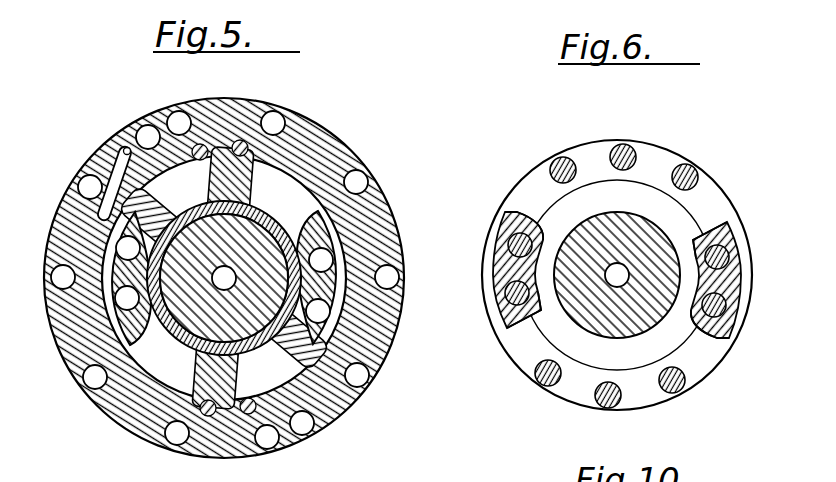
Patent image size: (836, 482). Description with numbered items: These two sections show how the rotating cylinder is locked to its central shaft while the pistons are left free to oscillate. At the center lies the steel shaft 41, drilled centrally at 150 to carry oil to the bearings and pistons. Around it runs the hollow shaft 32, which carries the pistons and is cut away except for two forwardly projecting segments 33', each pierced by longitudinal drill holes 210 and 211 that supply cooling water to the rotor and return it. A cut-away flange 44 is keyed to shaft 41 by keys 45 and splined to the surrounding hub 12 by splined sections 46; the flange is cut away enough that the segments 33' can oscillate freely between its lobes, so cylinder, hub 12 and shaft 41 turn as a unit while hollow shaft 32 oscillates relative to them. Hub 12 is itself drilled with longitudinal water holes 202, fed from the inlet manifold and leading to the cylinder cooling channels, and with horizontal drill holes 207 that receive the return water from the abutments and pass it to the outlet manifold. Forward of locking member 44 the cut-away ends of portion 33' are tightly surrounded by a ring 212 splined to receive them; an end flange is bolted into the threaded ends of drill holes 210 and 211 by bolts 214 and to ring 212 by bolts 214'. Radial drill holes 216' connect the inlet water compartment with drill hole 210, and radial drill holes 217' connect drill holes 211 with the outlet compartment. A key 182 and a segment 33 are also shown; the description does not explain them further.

In FIG. 5, the hub 12 is at (340, 139).
In FIG. 5, the hollow shaft 32 is at (188, 351).
In FIG. 5, the cam segment 33 is at (136, 281).
In FIG. 5, the forwardly projecting segments 33' is at (313, 277).
In FIG. 6, the forwardly projecting segments 33' is at (618, 281).
In FIG. 5, the steel shaft 41 is at (168, 338).
In FIG. 6, the steel shaft 41 is at (642, 327).
In FIG. 5, the cut-away flange 44 is at (262, 214).
In FIG. 5, the keys 45 is at (217, 243).
In FIG. 5, the splined sections 46 is at (242, 171).
In FIG. 5, the central drill hole 150 is at (237, 277).
In FIG. 6, the central drill hole 150 is at (630, 279).
In FIG. 5, the key 182 is at (120, 150).
In FIG. 5, the drill holes 202 is at (282, 113).
In FIG. 5, the horizontal drill holes 207 is at (178, 111).
In FIG. 5, the longitudinal drill hole 210 is at (116, 247).
In FIG. 5, the longitudinal drill hole 211 is at (118, 304).
In FIG. 6, the ring 212 is at (713, 358).
In FIG. 6, the bolts 214 is at (631, 271).
In FIG. 6, the bolts 214' is at (636, 276).
In FIG. 6, the radial drill holes 216' is at (632, 265).
In FIG. 6, the radial drill holes 217' is at (623, 276).